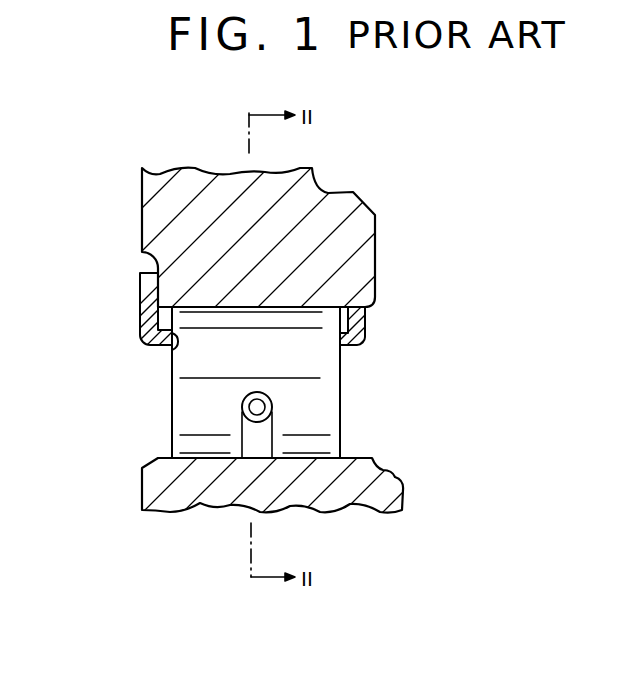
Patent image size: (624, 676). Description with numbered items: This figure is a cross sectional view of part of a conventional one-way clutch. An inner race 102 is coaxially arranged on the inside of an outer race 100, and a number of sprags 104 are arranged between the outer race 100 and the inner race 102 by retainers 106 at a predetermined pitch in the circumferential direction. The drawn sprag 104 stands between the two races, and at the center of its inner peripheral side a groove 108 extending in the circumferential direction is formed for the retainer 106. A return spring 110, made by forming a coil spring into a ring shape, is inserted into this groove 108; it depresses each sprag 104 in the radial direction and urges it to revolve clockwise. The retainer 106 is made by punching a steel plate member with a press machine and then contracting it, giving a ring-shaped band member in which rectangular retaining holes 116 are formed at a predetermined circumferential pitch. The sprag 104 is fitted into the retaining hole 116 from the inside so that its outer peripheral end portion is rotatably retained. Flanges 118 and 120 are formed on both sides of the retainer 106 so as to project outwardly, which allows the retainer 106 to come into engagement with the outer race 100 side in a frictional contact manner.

The outer race 100 is at (362, 228).
The inner race 102 is at (388, 490).
The sprag 104 is at (330, 397).
The retainer 106 is at (95, 328).
The groove 108 is at (272, 433).
The return spring 110 is at (250, 440).
The retaining hole 116 is at (172, 340).
The flange 118 is at (140, 282).
The flange 120 is at (360, 323).